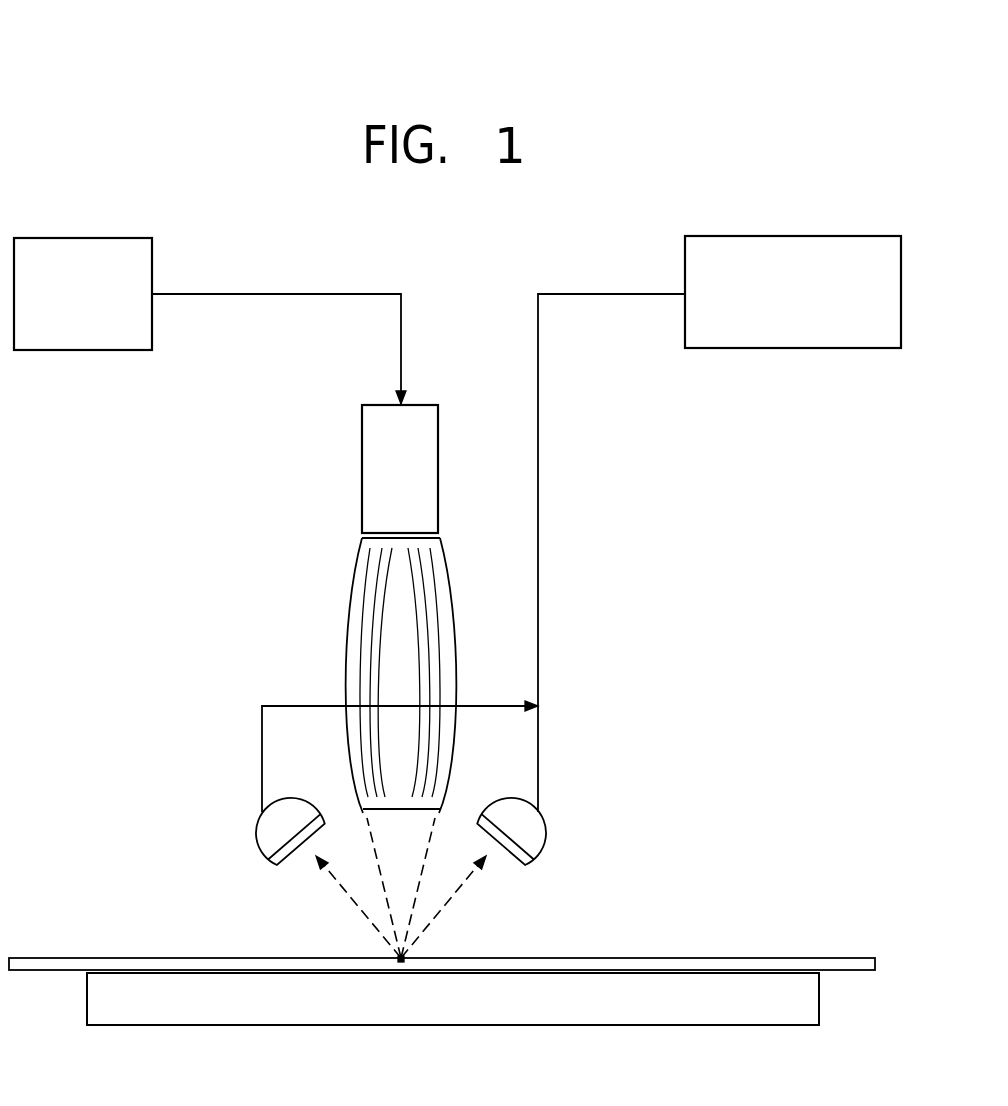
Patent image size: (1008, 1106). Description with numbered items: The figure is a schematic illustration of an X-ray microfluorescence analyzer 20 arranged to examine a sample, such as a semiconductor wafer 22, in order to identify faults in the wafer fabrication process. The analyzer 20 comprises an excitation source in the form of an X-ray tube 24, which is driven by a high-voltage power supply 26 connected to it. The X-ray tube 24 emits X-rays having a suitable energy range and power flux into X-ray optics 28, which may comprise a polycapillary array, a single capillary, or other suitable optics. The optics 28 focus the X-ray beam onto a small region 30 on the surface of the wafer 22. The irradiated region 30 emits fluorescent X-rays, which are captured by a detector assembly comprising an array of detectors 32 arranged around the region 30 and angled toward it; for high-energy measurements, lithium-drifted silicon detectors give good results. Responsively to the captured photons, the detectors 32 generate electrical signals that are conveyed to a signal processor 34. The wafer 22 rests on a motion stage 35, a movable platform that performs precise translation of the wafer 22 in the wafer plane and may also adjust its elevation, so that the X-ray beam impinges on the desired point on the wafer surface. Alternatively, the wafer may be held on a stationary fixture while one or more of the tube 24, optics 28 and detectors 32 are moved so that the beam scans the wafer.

The X-ray microfluorescence analyzer 20 is at (113, 90).
The semiconductor wafer 22 is at (790, 957).
The X-ray tube 24 is at (362, 445).
The high-voltage power supply 26 is at (72, 238).
The X-ray optics 28 is at (352, 579).
The region 30 is at (386, 960).
The detectors 32 is at (258, 835).
The signal processor 34 is at (785, 236).
The motion stage 35 is at (819, 1002).